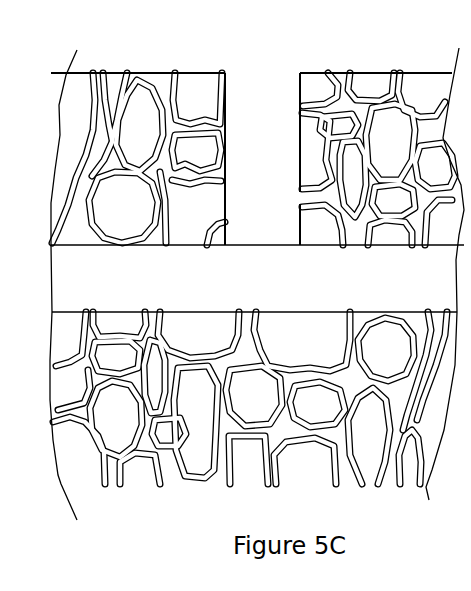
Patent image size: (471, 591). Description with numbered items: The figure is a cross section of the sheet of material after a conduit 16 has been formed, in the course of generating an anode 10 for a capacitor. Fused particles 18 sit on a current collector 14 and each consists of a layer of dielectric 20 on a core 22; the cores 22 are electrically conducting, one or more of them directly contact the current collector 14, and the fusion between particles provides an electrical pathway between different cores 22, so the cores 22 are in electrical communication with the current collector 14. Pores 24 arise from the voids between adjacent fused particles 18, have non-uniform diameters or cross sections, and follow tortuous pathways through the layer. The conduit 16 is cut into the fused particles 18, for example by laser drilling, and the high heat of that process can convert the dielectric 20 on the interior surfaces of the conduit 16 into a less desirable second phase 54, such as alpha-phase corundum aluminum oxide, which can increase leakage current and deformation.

The anode 10 is at (53, 66).
The current collector 14 is at (247, 250).
The conduit 16 is at (255, 75).
The fused particles 18 is at (115, 72).
The dielectric 20 is at (166, 226).
The core 22 is at (200, 90).
The pores 24 is at (175, 193).
The second phase 54 is at (228, 98).